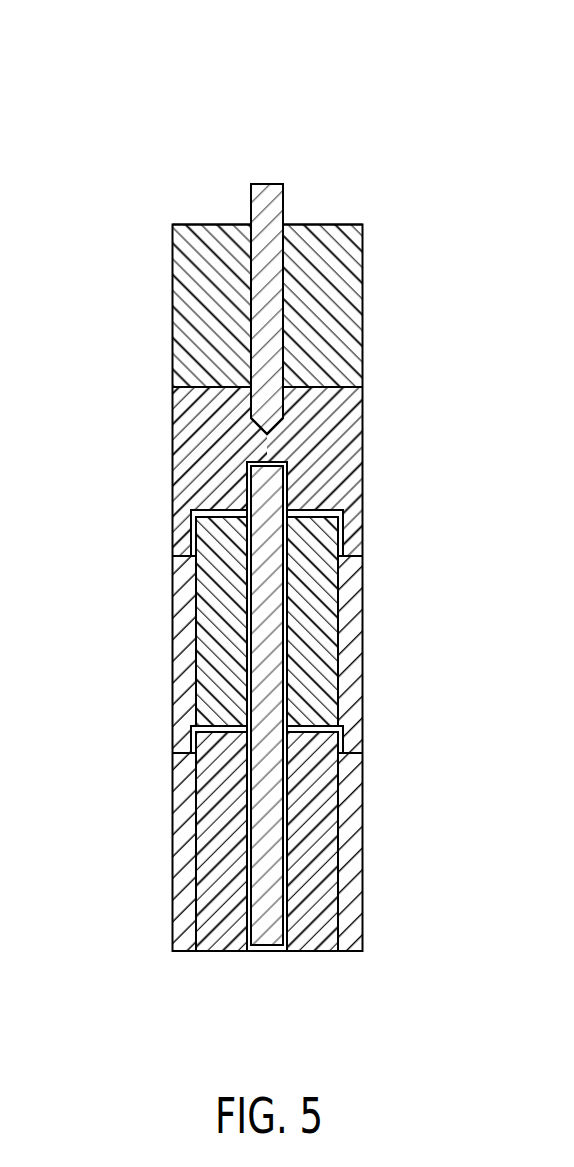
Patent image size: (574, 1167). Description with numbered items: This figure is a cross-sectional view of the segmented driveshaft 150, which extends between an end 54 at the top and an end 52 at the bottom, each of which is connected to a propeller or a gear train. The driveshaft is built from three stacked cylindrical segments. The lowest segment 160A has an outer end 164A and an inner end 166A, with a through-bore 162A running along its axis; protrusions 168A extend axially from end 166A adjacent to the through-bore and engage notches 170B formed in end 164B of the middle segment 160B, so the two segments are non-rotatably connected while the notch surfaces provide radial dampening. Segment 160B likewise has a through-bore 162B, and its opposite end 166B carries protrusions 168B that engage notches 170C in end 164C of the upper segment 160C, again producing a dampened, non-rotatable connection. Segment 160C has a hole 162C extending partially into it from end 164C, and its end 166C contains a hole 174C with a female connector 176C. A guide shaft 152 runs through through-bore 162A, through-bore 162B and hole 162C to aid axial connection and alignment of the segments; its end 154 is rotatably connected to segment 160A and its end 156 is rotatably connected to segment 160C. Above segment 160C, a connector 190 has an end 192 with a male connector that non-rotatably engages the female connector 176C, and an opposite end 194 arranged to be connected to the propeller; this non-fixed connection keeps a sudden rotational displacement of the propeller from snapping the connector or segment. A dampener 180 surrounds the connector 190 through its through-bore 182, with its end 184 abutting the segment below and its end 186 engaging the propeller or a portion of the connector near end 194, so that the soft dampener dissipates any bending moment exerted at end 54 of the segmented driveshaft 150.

The segmented driveshaft 150 is at (112, 87).
The end 54 is at (127, 179).
The end 52 is at (363, 978).
The dampener 180 is at (363, 330).
The end 186 is at (335, 224).
The end 184 is at (343, 388).
The through-bore 182 is at (283, 297).
The end 194 is at (270, 184).
The connector 190 is at (265, 205).
The end 192 is at (258, 424).
The segment 160C is at (185, 472).
The hole 162C is at (297, 486).
The end 166C is at (183, 397).
The hole 174C is at (288, 393).
The female connector 176C is at (285, 430).
The end 164C is at (178, 553).
The notches 170C is at (343, 527).
The through-bore 162B is at (297, 655).
The segment 160B is at (185, 628).
The end 166B is at (183, 560).
The protrusions 168B is at (337, 535).
The end 164B is at (178, 751).
The notches 170B is at (343, 725).
The through-bore 162A is at (297, 800).
The segment 160A is at (182, 820).
The end 166A is at (183, 757).
The protrusions 168A is at (337, 745).
The end 164A is at (200, 951).
The guide shaft 152 is at (262, 850).
The end 156 is at (263, 460).
The end 154 is at (267, 951).